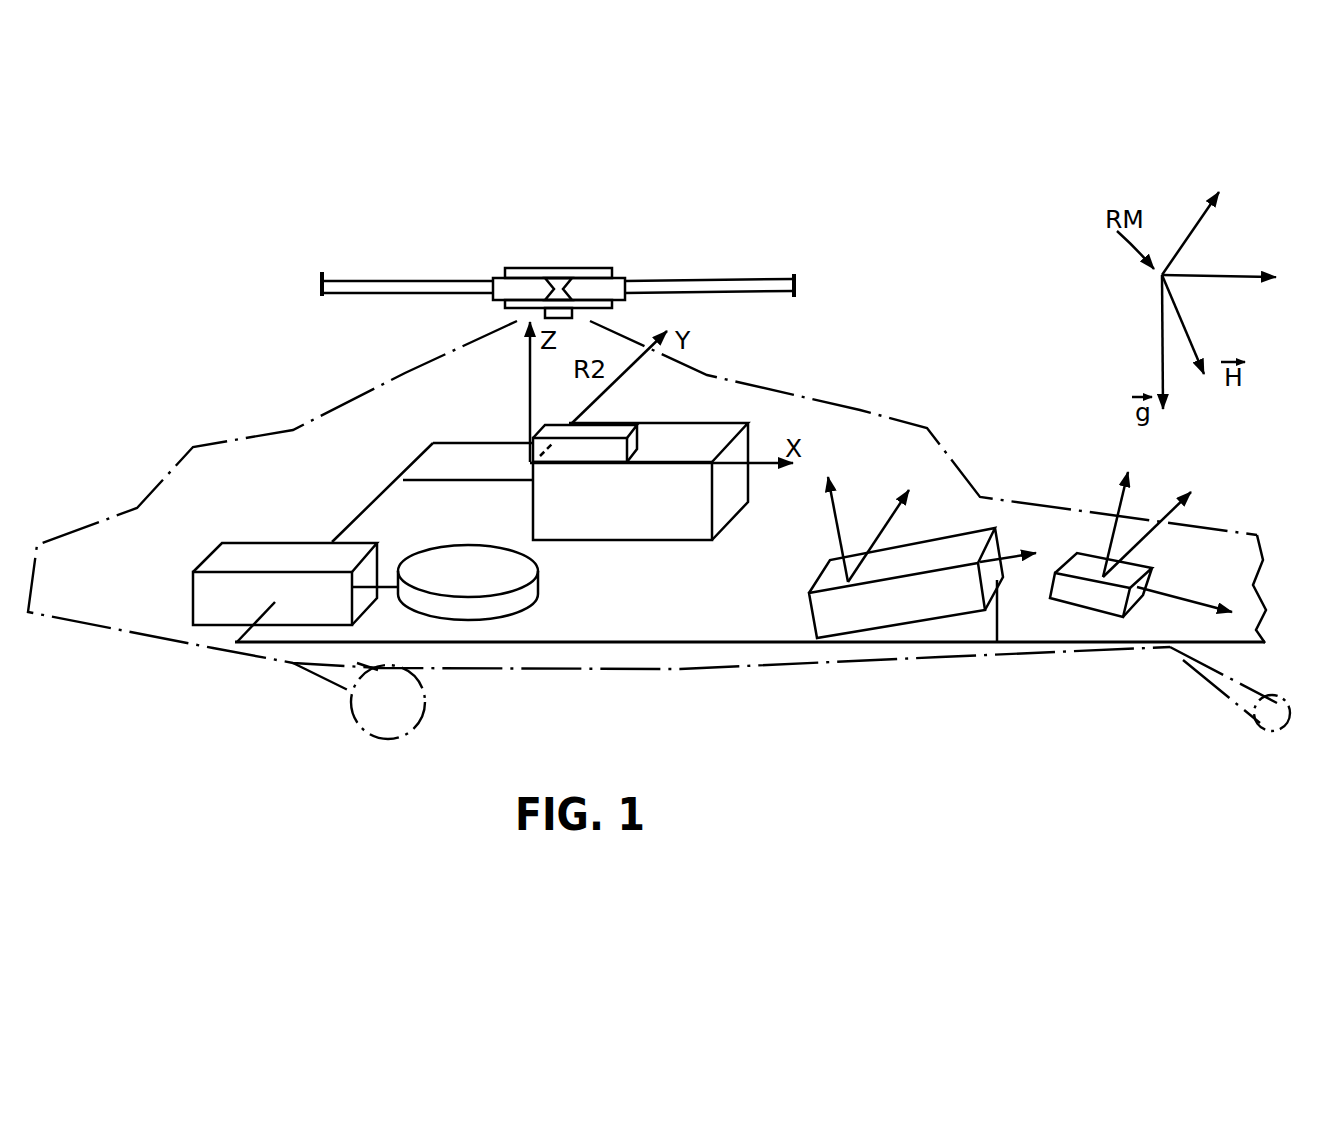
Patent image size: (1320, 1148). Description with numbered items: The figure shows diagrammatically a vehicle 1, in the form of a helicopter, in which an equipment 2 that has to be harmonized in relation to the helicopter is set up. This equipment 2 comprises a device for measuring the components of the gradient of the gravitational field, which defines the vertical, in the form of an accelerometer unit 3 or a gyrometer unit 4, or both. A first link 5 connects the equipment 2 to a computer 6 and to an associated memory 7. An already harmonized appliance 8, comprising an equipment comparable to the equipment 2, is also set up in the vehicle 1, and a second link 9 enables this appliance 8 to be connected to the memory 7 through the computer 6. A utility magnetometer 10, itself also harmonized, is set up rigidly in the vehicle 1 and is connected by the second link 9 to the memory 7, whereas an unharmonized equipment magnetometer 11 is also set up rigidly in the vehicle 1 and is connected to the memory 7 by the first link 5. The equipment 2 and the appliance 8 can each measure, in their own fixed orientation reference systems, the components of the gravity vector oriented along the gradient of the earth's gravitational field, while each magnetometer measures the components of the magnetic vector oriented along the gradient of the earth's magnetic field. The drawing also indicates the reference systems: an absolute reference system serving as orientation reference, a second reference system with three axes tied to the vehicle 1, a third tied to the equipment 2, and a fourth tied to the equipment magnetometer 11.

The vehicle 1 is at (853, 407).
The equipment 2 is at (874, 559).
The accelerometer unit 3 is at (874, 559).
The gyrometer unit 4 is at (808, 618).
The first link 5 is at (630, 643).
The computer 6 is at (243, 552).
The memory 7 is at (448, 545).
The harmonized appliance 8 is at (595, 542).
The second link 9 is at (357, 513).
The utility magnetometer 10 is at (600, 432).
The equipment magnetometer 11 is at (1077, 567).